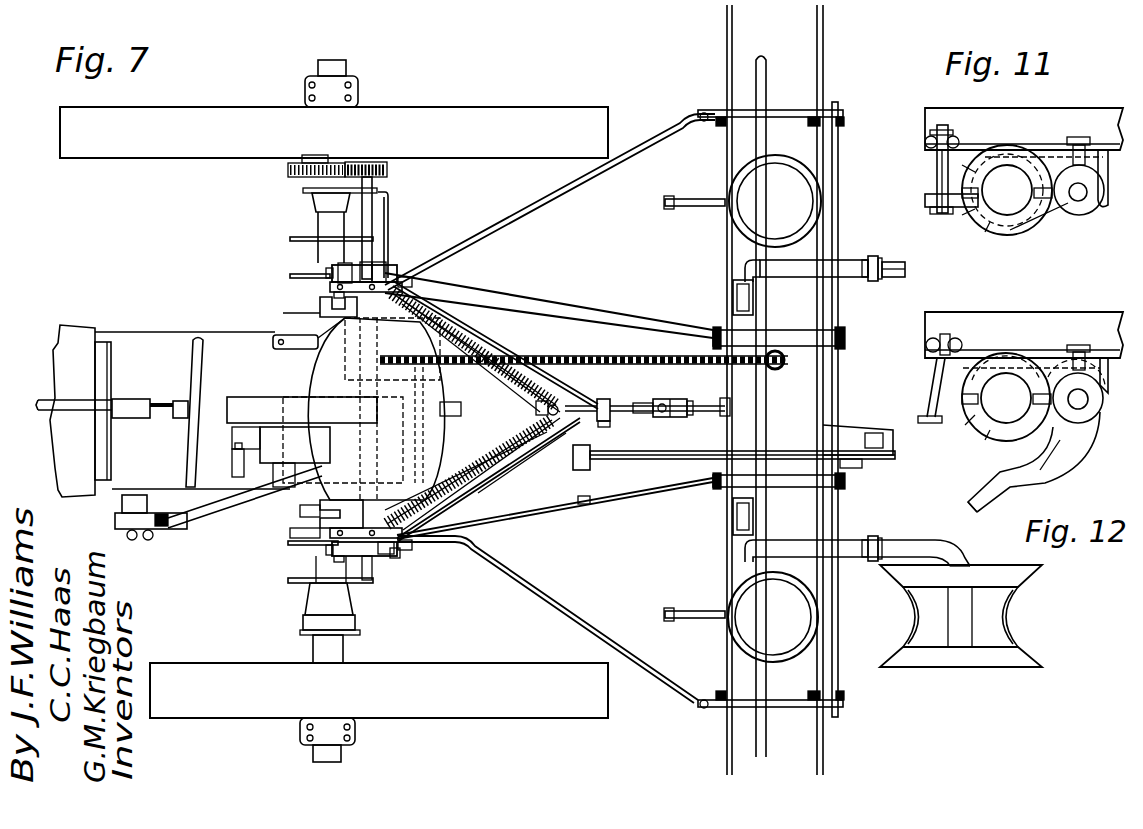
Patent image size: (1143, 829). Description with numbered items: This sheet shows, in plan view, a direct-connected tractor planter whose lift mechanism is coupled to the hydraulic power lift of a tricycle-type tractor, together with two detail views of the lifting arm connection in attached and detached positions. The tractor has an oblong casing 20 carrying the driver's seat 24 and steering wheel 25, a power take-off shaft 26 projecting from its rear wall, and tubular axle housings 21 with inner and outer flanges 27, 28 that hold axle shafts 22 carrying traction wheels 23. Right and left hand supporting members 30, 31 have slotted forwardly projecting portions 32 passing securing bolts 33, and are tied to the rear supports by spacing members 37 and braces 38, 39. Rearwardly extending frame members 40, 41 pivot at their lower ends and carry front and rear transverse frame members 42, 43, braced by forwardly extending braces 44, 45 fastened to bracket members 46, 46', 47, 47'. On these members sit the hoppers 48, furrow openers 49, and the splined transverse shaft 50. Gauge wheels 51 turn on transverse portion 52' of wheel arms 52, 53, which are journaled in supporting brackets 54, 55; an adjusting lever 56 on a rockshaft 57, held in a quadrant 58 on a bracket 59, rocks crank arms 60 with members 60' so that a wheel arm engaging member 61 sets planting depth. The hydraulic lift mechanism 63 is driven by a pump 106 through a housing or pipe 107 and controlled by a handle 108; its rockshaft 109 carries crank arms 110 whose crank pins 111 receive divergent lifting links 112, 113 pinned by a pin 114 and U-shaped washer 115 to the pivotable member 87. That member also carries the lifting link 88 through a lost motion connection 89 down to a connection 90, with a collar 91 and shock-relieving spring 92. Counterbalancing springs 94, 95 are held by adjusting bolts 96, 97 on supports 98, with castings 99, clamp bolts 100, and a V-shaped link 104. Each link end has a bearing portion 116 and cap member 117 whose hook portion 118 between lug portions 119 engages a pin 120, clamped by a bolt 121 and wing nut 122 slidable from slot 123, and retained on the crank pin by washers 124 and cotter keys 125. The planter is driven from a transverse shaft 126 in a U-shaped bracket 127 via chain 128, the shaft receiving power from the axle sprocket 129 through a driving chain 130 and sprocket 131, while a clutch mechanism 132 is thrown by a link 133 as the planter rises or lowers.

In FIG. 7, the oblong casing 20 is at (110, 332).
In FIG. 7, the tubular axle housings 21 is at (318, 196).
In FIG. 7, the axle shafts 22 is at (333, 72).
In FIG. 7, the traction wheels 23 is at (207, 118).
In FIG. 7, the driver's seat 24 is at (332, 386).
In FIG. 7, the steering wheel 25 is at (195, 348).
In FIG. 7, the power take-off shaft 26 is at (462, 408).
In FIG. 7, the inner flanges 27 is at (292, 276).
In FIG. 7, the outer flanges 28 is at (292, 239).
In FIG. 7, the right hand supporting member 30 is at (404, 285).
In FIG. 7, the left hand supporting member 31 is at (400, 548).
In FIG. 7, the forwardly projecting portions 32 is at (322, 302).
In FIG. 7, the securing bolts 33 is at (415, 278).
In FIG. 7, the spacing members 37 is at (626, 357).
In FIG. 7, the right hand brace 38 is at (498, 336).
In FIG. 7, the left hand brace 39 is at (478, 492).
In FIG. 7, the right hand frame member 40 is at (615, 322).
In FIG. 7, the left hand frame member 41 is at (588, 500).
In FIG. 7, the front transverse frame member 42 is at (727, 572).
In FIG. 7, the rear transverse frame member 43 is at (820, 606).
In FIG. 7, the forwardly extending brace 44 is at (556, 202).
In FIG. 7, the forwardly extending brace 45 is at (540, 596).
In FIG. 7, the downwardly extending bracket member 46 is at (699, 130).
In FIG. 7, the downwardly extending bracket member 46' is at (694, 714).
In FIG. 7, the downwardly extending bracket member 47 is at (790, 109).
In FIG. 7, the downwardly extending bracket member 47' is at (792, 694).
In FIG. 7, the hoppers 48 is at (774, 408).
In FIG. 7, the furrow openers 49 is at (664, 203).
In FIG. 7, the transverse shaft 50 is at (782, 364).
In FIG. 7, the gauge wheels 51 is at (1035, 580).
In FIG. 7, the wheel arm 52 is at (865, 541).
In FIG. 7, the transversely extending portion 52' is at (970, 538).
In FIG. 7, the wheel arm 53 is at (893, 287).
In FIG. 7, the supporting bracket 54 is at (742, 272).
In FIG. 7, the supporting bracket 55 is at (735, 539).
In FIG. 7, the adjusting lever 56 is at (580, 505).
In FIG. 7, the transverse rockshaft 57 is at (838, 630).
In FIG. 7, the adjusting quadrant 58 is at (860, 468).
In FIG. 7, the rearwardly extending bracket 59 is at (856, 426).
In FIG. 7, the crank arms 60 is at (889, 396).
In FIG. 7, the crank member 60' is at (864, 407).
In FIG. 7, the wheel arm engaging member 61 is at (888, 270).
In FIG. 7, the hydraulic lift mechanism 63 is at (298, 478).
In FIG. 7, the pivotable member 87 is at (652, 460).
In FIG. 7, the lifting link 88 is at (660, 417).
In FIG. 7, the lost motion connection 89 is at (680, 417).
In FIG. 7, the connection 90 is at (728, 406).
In FIG. 7, the collar 91 is at (692, 402).
In FIG. 7, the spring 92 is at (664, 402).
In FIG. 7, the counterbalancing spring 94 is at (485, 375).
In FIG. 7, the counterbalancing spring 95 is at (469, 472).
In FIG. 7, the adjusting bolt 96 is at (472, 300).
In FIG. 7, the adjusting bolt 97 is at (437, 484).
In FIG. 7, the supports 98 is at (322, 338).
In FIG. 7, the casting 99 is at (566, 388).
In FIG. 7, the clamp bolt 100 is at (549, 412).
In FIG. 7, the link 104 is at (603, 400).
In FIG. 7, the pump 106 is at (152, 530).
In FIG. 7, the housing or pipe 107 is at (198, 508).
In FIG. 7, the control handle 108 is at (233, 466).
In FIG. 7, the transverse rockshaft 109 is at (330, 522).
In FIG. 7, the eccentric crank arms 110 is at (325, 311).
In FIG. 7, the crank pins 111 is at (346, 276).
In FIG. 11, the crank pins 111 is at (1007, 190).
In FIG. 12, the crank pins 111 is at (1006, 397).
In FIG. 7, the lifting link 112 is at (514, 306).
In FIG. 7, the lifting link 113 is at (535, 476).
In FIG. 11, the lifting link 113 is at (1082, 113).
In FIG. 12, the lifting link 113 is at (1065, 316).
In FIG. 7, the pin 114 is at (606, 420).
In FIG. 7, the U-shaped washer 115 is at (638, 403).
In FIG. 7, the bearing portion 116 is at (352, 265).
In FIG. 11, the bearing portion 116 is at (1048, 158).
In FIG. 12, the bearing portion 116 is at (1048, 368).
In FIG. 11, the cap member 117 is at (1065, 215).
In FIG. 12, the cap member 117 is at (1055, 476).
In FIG. 11, the U-shaped hook portion 118 is at (1106, 213).
In FIG. 12, the U-shaped hook portion 118 is at (1103, 385).
In FIG. 11, the lug portions 119 is at (1076, 204).
In FIG. 12, the lug portions 119 is at (1082, 411).
In FIG. 7, the pin 120 is at (384, 275).
In FIG. 11, the pin 120 is at (1068, 215).
In FIG. 12, the pin 120 is at (1050, 448).
In FIG. 11, the bolt 121 is at (937, 168).
In FIG. 12, the bolt 121 is at (934, 372).
In FIG. 7, the wing nut 122 is at (336, 283).
In FIG. 11, the wing nut 122 is at (952, 126).
In FIG. 12, the wing nut 122 is at (930, 343).
In FIG. 11, the slot 123 is at (932, 197).
In FIG. 12, the slot 123 is at (985, 497).
In FIG. 7, the washers 124 is at (370, 270).
In FIG. 11, the washers 124 is at (987, 234).
In FIG. 12, the washers 124 is at (986, 441).
In FIG. 7, the cotter keys 125 is at (328, 272).
In FIG. 11, the cotter keys 125 is at (970, 205).
In FIG. 12, the cotter keys 125 is at (968, 420).
In FIG. 7, the transverse shaft 126 is at (372, 206).
In FIG. 7, the U-shaped supporting bracket 127 is at (388, 209).
In FIG. 7, the flexible chain 128 is at (652, 355).
In FIG. 7, the sprocket 129 is at (318, 164).
In FIG. 7, the flexible driving chain 130 is at (358, 162).
In FIG. 7, the sprocket 131 is at (388, 166).
In FIG. 7, the clutch mechanism 132 is at (376, 409).
In FIG. 7, the link 133 is at (513, 411).